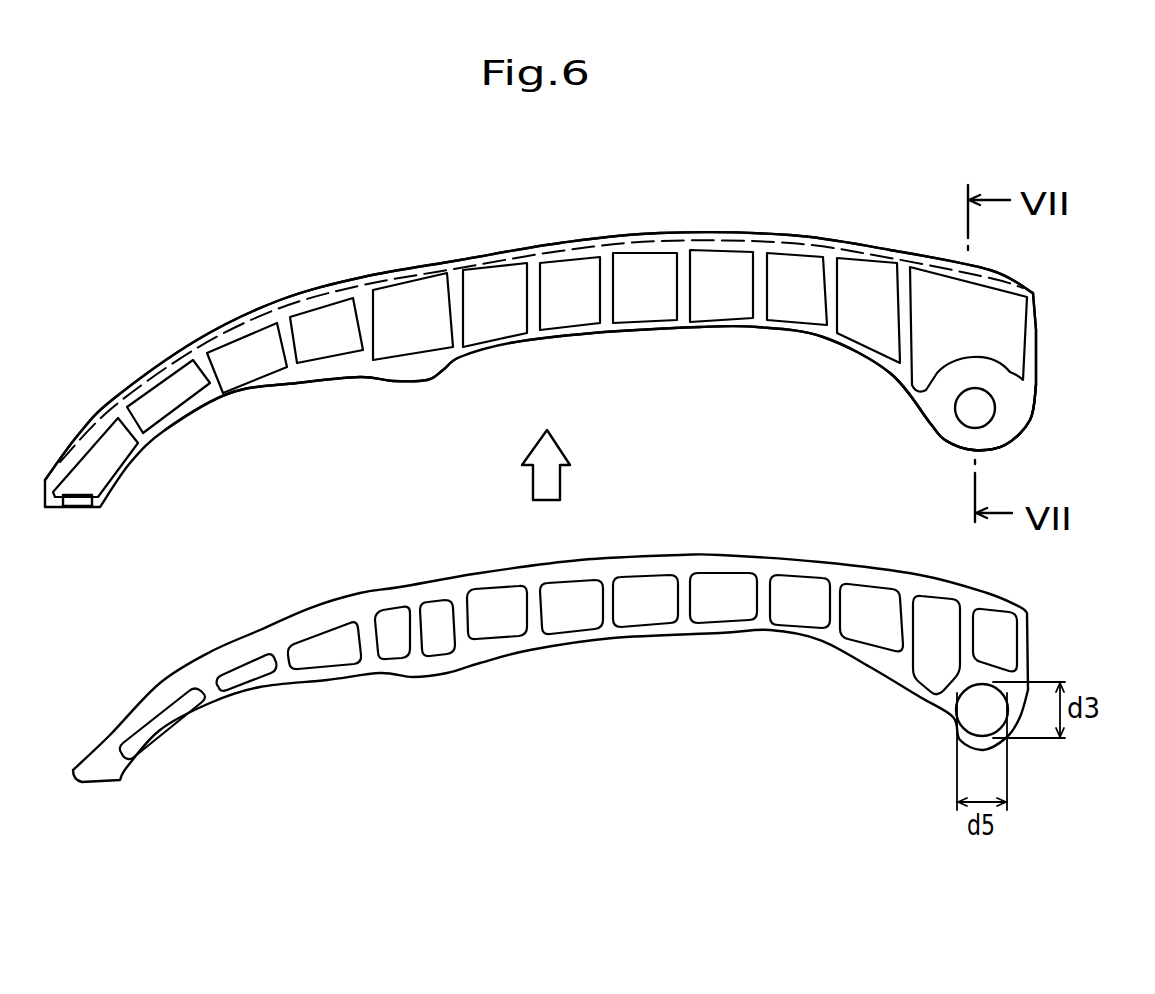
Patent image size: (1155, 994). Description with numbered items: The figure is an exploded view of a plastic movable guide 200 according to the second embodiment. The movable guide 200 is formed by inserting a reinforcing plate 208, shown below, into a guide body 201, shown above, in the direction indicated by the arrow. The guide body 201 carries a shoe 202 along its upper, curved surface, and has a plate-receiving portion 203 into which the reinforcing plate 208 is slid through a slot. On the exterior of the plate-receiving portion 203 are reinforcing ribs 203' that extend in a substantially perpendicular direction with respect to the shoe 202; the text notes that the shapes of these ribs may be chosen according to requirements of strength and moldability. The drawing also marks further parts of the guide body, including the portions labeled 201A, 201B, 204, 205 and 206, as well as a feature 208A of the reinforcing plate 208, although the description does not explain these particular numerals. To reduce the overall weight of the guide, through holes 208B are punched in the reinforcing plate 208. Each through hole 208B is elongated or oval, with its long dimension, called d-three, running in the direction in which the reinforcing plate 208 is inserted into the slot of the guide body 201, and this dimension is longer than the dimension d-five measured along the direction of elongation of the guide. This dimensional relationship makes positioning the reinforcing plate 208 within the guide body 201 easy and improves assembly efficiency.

The movable guide 200 is at (647, 226).
The guide body 201 is at (1038, 303).
The boss end portion of guide body 201A is at (921, 425).
The notch portion of guide body 201B is at (430, 380).
The shoe 202 is at (817, 238).
The plate-receiving portion 203 is at (540, 373).
The reinforcing ribs 203' is at (768, 333).
The rib of guide body 204 is at (265, 387).
The mounting hole 205 is at (988, 414).
The boss 206 is at (970, 438).
The reinforcing plate 208 is at (687, 627).
The mounting hole of plate 208A is at (967, 703).
The through holes 208B is at (804, 620).